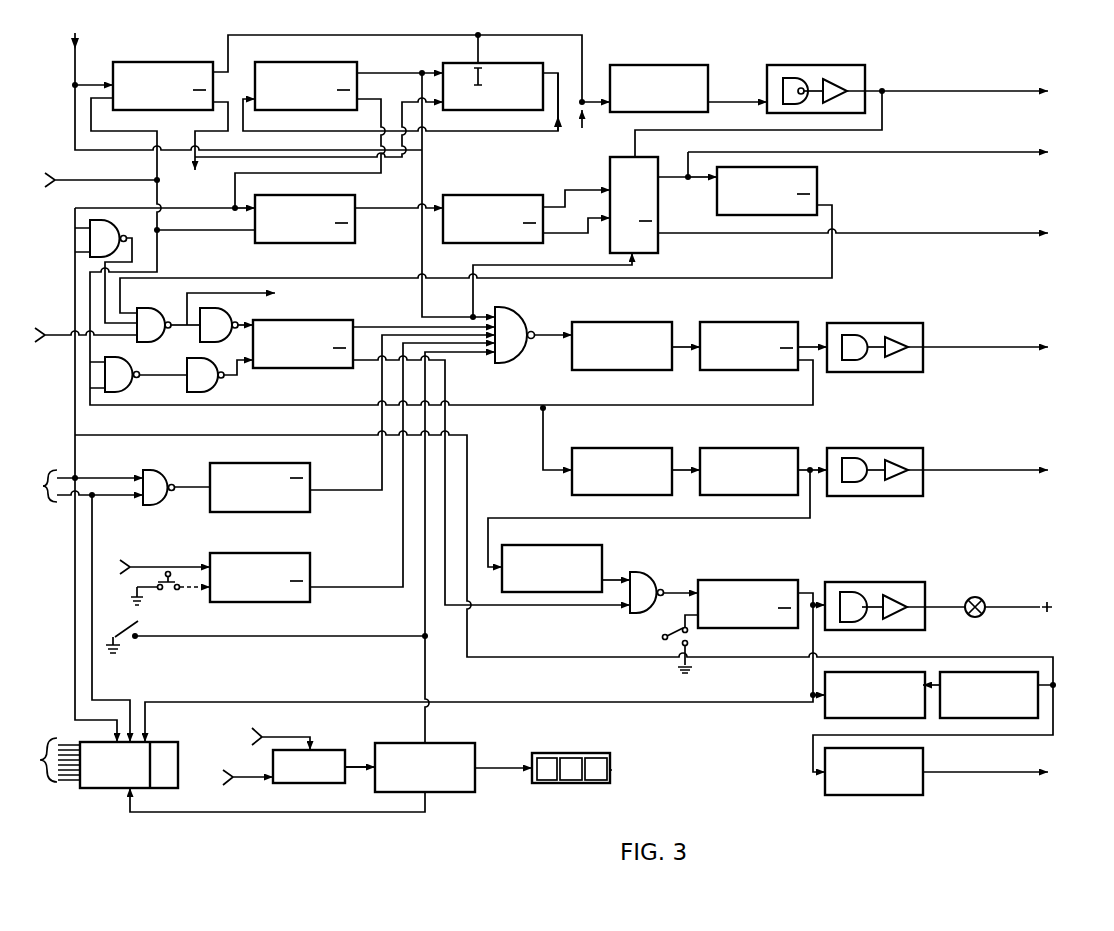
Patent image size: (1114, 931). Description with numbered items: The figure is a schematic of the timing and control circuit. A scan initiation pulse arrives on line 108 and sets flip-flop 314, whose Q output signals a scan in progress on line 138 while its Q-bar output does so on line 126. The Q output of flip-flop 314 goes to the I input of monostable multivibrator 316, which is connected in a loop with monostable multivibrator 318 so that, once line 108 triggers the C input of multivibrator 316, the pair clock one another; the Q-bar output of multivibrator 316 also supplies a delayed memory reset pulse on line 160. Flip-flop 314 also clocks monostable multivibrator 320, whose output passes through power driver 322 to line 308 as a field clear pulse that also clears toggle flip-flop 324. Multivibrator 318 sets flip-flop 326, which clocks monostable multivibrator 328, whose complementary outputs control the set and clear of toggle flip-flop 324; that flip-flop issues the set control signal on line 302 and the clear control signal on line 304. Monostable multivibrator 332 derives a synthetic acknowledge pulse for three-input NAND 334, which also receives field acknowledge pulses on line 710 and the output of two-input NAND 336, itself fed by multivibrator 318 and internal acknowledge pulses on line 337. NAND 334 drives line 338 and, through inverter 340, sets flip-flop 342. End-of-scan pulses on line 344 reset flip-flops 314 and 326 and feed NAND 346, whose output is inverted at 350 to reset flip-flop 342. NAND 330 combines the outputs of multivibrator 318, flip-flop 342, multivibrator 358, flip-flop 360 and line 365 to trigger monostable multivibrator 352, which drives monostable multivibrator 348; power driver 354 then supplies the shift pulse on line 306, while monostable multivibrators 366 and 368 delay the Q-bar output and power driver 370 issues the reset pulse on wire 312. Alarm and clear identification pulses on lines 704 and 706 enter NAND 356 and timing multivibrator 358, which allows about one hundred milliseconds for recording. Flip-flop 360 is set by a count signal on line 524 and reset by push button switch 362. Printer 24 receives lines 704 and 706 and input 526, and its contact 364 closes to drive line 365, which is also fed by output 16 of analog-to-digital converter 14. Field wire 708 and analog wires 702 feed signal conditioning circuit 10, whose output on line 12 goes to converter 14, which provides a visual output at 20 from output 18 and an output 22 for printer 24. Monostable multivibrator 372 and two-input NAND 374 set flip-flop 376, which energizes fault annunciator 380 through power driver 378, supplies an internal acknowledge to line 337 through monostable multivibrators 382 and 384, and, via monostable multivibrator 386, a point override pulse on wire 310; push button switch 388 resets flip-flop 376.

The scan initiation pulse line 108 is at (241, 79).
The flip-flop 314 is at (130, 62).
The monostable multivibrator 318 is at (274, 62).
The monostable multivibrator 316 is at (486, 63).
The monostable multivibrator 320 is at (638, 65).
The power driver 322 is at (791, 65).
The field clear pulse line 308 is at (992, 93).
The set control signal line 302 is at (895, 153).
The clear control signal line 304 is at (880, 237).
The monostable multivibrator 332 is at (823, 190).
The scan-in-progress line 126 is at (196, 165).
The end-of-scan line 344 is at (58, 178).
The delayed memory reset pulse line 160 is at (552, 134).
The scan-in-progress line 138 is at (583, 122).
The toggle flip-flop 324 is at (610, 168).
The flip-flop 326 is at (341, 195).
The monostable multivibrator 328 is at (450, 195).
The two-input NAND 336 is at (94, 222).
The output line of NAND 334 338 is at (211, 293).
The inverter 340 is at (220, 308).
The three-input NAND 334 is at (188, 337).
The two-input NAND 346 is at (120, 392).
The inverter 350 is at (210, 392).
The acknowledge pulse line 710 is at (52, 331).
The flip-flop 342 is at (321, 320).
The NAND gate 330 is at (509, 307).
The monostable multivibrator 352 is at (599, 322).
The monostable multivibrator 348 is at (710, 322).
The power driver 354 is at (839, 323).
The shift pulse line 306 is at (1005, 350).
The monostable multivibrator 366 is at (590, 448).
The monostable multivibrator 368 is at (717, 448).
The power driver 370 is at (840, 448).
The reset pulse wire 312 is at (1005, 473).
The alarm identification line 704 is at (74, 454).
The clear identification line 706 is at (64, 496).
The NAND 356 is at (181, 454).
The monostable multivibrator 358 is at (228, 463).
The preselected count line 524 is at (161, 540).
The flip-flop 360 is at (242, 553).
The push button switch 362 is at (164, 590).
The printer contact 364 is at (136, 635).
The fifth input line 365 is at (422, 580).
The internal acknowledge line 337 is at (470, 456).
The monostable multivibrator 372 is at (555, 545).
The two-input NAND 374 is at (646, 572).
The flip-flop 376 is at (714, 580).
The power driver 378 is at (838, 582).
The visual internal fault annunciator 380 is at (972, 596).
The push button switch 388 is at (664, 637).
The monostable multivibrator 382 is at (845, 672).
The monostable multivibrator 384 is at (951, 672).
The monostable multivibrator 386 is at (923, 764).
The point override pulse wire 310 is at (1012, 773).
The printer input from counting circuit 526 is at (40, 760).
The printer 24 is at (178, 776).
The sensing type wire 708 is at (270, 734).
The analog signal wires 702 is at (250, 755).
The signal conditioning circuit 10 is at (290, 783).
The analog signal line 12 is at (351, 769).
The analog-to-digital converter 14 is at (432, 792).
The converter output 16 is at (426, 718).
The converter output 18 is at (492, 770).
The visual output 20 is at (610, 770).
The converter output to printer 22 is at (130, 812).